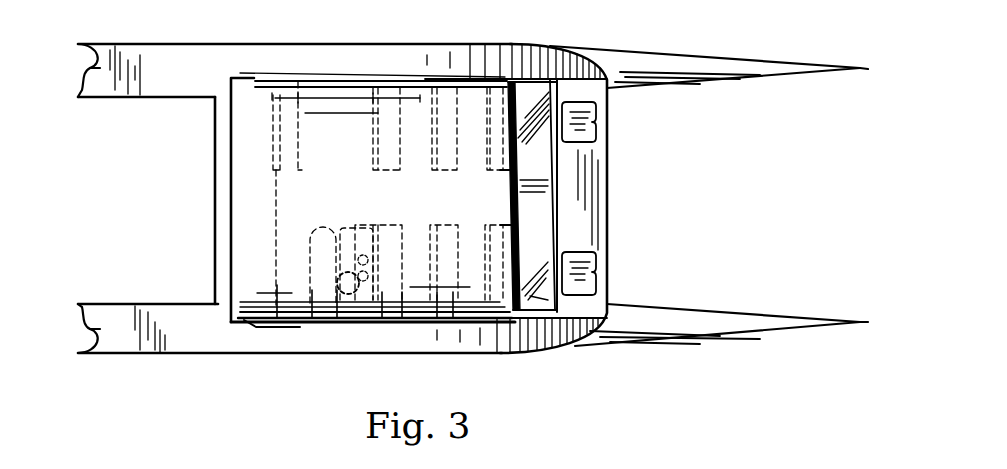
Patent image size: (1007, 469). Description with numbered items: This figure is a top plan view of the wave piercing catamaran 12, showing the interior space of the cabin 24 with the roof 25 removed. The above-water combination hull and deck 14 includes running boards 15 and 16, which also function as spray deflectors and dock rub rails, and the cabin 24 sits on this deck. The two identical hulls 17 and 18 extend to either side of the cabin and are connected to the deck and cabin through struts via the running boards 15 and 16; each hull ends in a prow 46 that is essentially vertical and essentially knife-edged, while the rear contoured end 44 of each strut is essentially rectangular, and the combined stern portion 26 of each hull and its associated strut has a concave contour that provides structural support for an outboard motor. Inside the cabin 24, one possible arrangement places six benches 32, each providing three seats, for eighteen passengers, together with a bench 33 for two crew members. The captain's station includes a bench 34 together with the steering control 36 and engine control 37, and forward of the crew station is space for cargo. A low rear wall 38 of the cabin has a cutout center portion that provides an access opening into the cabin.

The wave piercing catamaran 12 is at (655, 122).
The combination hull and deck 14 is at (222, 106).
The running board 15 is at (203, 82).
The running board 16 is at (213, 344).
The hull 17 is at (705, 57).
The hull 18 is at (722, 328).
The cabin 24 is at (355, 79).
The roof 25 is at (232, 144).
The combined stern portion 26 is at (86, 58).
The benches 32 is at (493, 225).
The bench 33 is at (302, 170).
The bench 34 is at (310, 273).
The steering control 36 is at (345, 268).
The engine control 37 is at (370, 320).
The low rear wall 38 is at (275, 187).
The rear contoured end 44 is at (98, 76).
The prow 46 is at (876, 66).